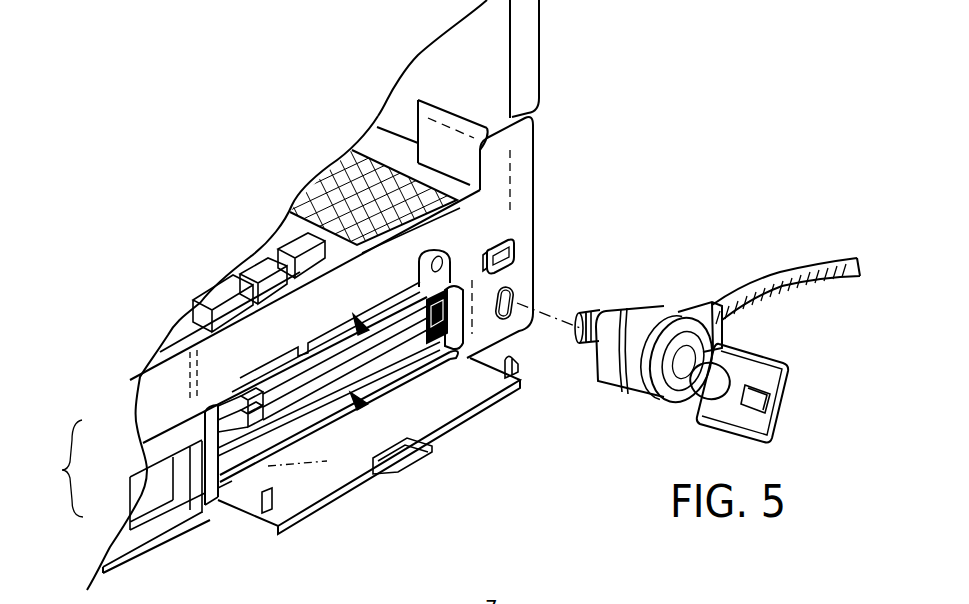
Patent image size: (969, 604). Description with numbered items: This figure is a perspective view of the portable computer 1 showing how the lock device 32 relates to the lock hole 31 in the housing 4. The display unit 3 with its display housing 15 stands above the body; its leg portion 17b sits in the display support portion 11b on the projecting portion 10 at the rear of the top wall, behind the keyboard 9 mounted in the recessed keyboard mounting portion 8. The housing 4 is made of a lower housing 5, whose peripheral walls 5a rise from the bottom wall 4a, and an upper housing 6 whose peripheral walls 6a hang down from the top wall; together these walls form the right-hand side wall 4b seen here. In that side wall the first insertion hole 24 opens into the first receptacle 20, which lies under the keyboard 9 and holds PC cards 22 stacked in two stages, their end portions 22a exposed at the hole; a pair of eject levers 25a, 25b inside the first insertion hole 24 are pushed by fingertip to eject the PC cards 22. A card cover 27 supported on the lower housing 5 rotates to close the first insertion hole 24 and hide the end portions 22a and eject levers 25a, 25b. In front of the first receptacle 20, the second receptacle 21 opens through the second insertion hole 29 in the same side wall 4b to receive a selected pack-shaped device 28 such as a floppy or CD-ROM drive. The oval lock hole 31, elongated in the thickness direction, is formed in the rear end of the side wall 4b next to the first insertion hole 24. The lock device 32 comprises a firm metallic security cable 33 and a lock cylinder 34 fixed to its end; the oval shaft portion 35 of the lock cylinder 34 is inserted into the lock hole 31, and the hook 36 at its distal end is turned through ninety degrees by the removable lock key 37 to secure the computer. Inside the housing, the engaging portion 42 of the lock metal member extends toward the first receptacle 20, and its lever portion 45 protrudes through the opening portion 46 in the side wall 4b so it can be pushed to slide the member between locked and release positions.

The portable computer 1 is at (588, 71).
The display unit 3 is at (527, 30).
The housing 4 is at (61, 468).
The bottom wall 4a is at (417, 368).
The side wall 4b is at (156, 402).
The lower housing 5 is at (178, 490).
The peripheral wall 5a is at (470, 352).
The upper housing 6 is at (183, 428).
The peripheral wall 6a is at (163, 360).
The keyboard mounting portion 8 is at (297, 247).
The keyboard 9 is at (212, 297).
The projecting portion 10 is at (527, 132).
The display support portion 11b is at (412, 112).
The display housing 15 is at (436, 52).
The leg portion 17b is at (387, 114).
The first receptacle 20 is at (303, 413).
The second receptacle 21 is at (190, 520).
The PC card 22 is at (340, 343).
The end portion 22a is at (363, 393).
The first insertion hole 24 is at (307, 373).
The eject lever 25a is at (228, 400).
The eject lever 25b is at (220, 493).
The card cover 27 is at (313, 477).
The pack-shaped device 28 is at (150, 503).
The second insertion hole 29 is at (115, 565).
The lock hole 31 is at (512, 294).
The lock device 32 is at (707, 352).
The security cable 33 is at (778, 273).
The lock cylinder 34 is at (660, 332).
The shaft portion 35 is at (598, 320).
The hook 36 is at (578, 340).
The lock key 37 is at (773, 370).
The engaging portion 42 is at (427, 303).
The lever portion 45 is at (490, 252).
The opening portion 46 is at (500, 247).